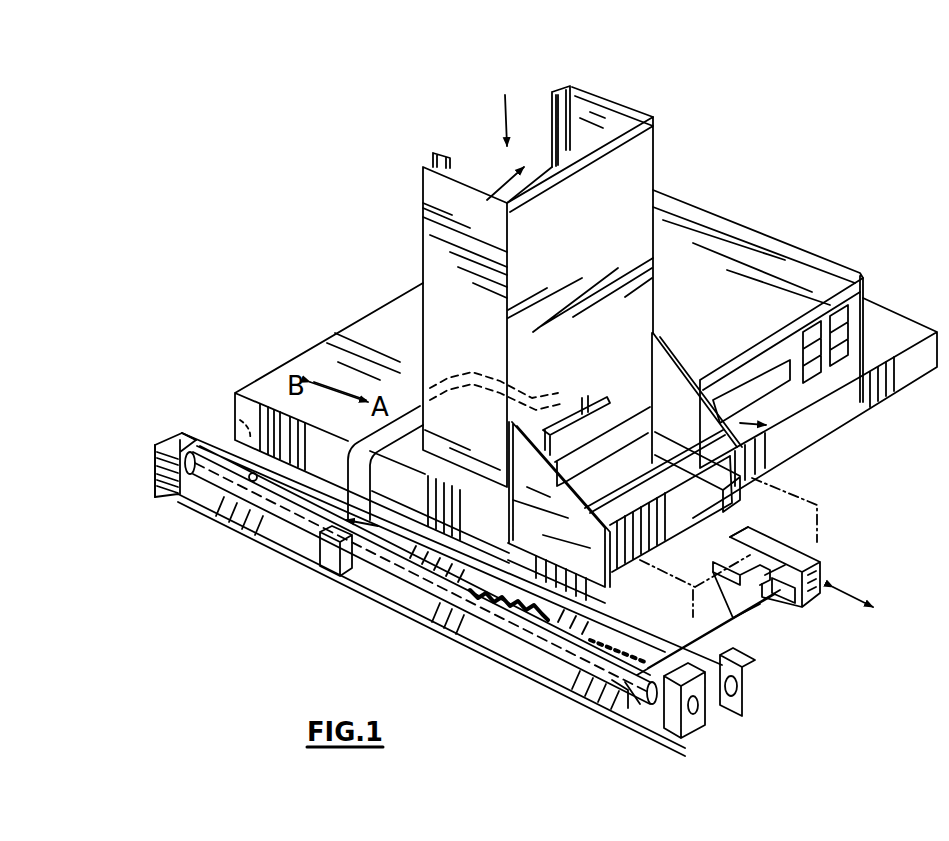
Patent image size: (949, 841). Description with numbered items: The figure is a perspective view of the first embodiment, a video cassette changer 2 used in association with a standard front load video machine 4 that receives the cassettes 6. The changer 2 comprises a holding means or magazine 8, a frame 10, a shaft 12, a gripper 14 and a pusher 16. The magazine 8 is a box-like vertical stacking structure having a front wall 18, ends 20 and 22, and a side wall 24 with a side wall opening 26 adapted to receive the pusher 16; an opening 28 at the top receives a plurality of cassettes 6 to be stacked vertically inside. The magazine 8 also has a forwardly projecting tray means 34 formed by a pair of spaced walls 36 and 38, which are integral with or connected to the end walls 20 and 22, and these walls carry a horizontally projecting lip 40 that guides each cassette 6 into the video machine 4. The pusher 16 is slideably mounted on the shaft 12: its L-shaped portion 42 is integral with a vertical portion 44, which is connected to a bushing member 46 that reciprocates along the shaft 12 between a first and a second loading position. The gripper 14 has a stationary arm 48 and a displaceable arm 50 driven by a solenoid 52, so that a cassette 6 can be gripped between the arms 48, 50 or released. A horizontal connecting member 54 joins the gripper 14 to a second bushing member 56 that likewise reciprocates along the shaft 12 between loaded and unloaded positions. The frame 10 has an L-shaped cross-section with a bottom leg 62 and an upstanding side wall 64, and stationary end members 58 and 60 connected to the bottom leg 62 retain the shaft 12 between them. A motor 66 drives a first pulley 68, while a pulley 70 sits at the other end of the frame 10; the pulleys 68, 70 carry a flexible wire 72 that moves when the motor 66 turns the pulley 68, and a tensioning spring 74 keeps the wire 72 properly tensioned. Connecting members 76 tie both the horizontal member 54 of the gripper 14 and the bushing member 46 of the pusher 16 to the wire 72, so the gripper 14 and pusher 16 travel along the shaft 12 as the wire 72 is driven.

The cassette changer 2 is at (347, 596).
The video machine 4 is at (810, 271).
The cassette 6 is at (800, 493).
The magazine 8 is at (579, 257).
The frame 10 is at (431, 576).
The shaft 12 is at (432, 594).
The gripper 14 is at (798, 589).
The pusher 16 is at (588, 418).
The front wall 18 is at (584, 230).
The end 20 is at (476, 328).
The end 22 is at (618, 110).
The side wall 24 is at (563, 88).
The side wall opening 26 is at (502, 102).
The opening 28 is at (495, 198).
The tray means 34 is at (768, 428).
The spaced wall 36 is at (590, 552).
The spaced wall 38 is at (737, 500).
The lip 40 is at (622, 562).
The L-shaped portion 42 is at (412, 410).
The vertical portion 44 is at (348, 470).
The bushing member 46 is at (333, 553).
The stationary arm 48 is at (785, 545).
The displaceable arm 50 is at (757, 583).
The solenoid 52 is at (783, 587).
The horizontal connecting member 54 is at (733, 617).
The bushing member 56 is at (630, 696).
The stationary end member 58 is at (155, 470).
The stationary end member 60 is at (672, 730).
The bottom leg 62 is at (203, 503).
The upstanding side wall 64 is at (190, 433).
The motor 66 is at (223, 427).
The first pulley 68 is at (164, 443).
The pulley 70 is at (729, 706).
The wire 72 is at (290, 494).
The tensioning spring 74 is at (503, 602).
The connecting member 76 is at (408, 548).